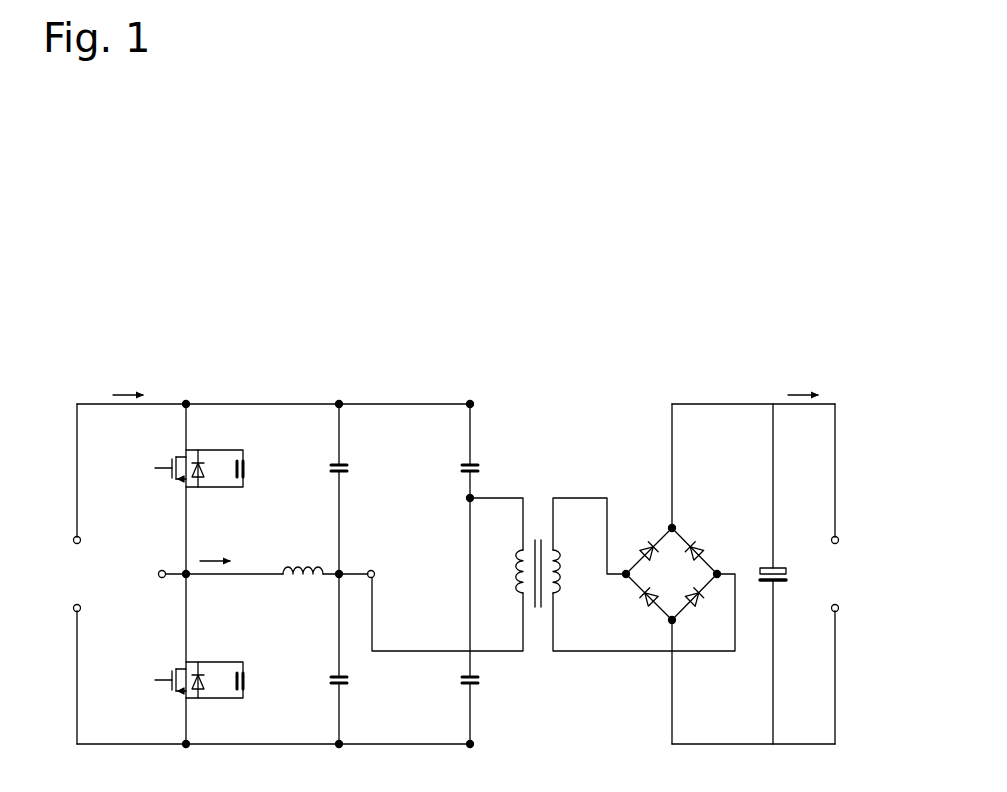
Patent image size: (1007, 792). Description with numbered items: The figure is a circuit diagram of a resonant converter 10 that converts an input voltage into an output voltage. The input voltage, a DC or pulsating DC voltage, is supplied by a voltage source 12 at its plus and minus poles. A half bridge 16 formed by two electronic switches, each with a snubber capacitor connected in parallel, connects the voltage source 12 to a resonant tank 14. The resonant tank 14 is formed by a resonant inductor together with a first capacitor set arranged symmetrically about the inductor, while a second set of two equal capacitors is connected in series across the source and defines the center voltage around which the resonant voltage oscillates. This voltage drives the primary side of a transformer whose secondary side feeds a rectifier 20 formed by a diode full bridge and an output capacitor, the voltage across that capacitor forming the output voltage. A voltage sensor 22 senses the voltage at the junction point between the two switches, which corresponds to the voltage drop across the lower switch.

The resonant converter 10 is at (433, 288).
The voltage source 12 is at (70, 550).
The resonant tank 14 is at (341, 395).
The half bridge 16 is at (189, 395).
The rectifier 20 is at (708, 395).
The voltage sensor 22 is at (159, 567).